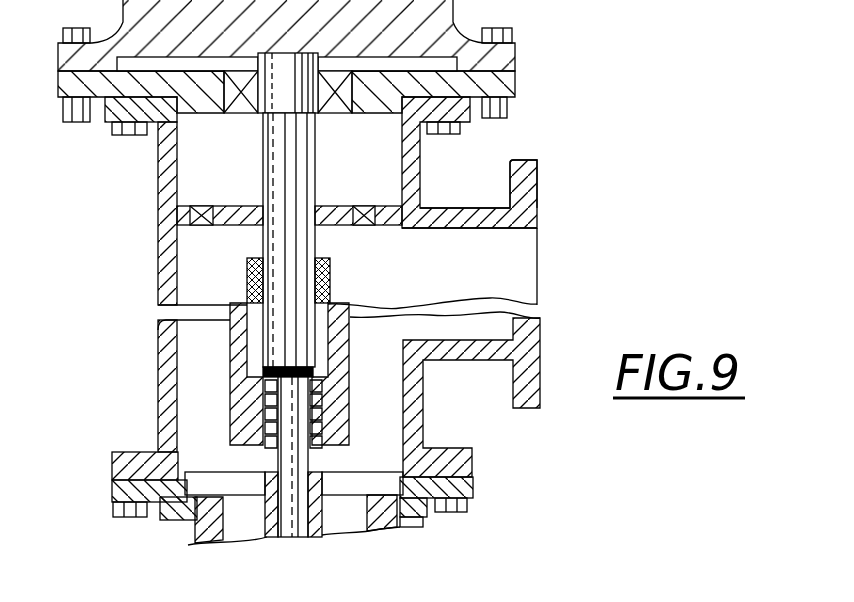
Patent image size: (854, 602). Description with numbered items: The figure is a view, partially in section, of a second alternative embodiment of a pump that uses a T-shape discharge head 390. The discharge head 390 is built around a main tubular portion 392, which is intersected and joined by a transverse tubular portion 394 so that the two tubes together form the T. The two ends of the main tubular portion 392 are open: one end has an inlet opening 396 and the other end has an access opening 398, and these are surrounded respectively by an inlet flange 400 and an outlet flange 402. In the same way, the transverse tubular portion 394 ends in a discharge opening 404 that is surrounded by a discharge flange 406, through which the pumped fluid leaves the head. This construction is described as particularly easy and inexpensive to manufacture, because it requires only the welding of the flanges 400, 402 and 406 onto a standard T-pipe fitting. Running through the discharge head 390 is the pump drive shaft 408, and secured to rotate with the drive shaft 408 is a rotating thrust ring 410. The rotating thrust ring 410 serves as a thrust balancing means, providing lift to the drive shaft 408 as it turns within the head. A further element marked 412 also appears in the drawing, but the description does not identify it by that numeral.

The T-shape discharge head 390 is at (146, 212).
The main tubular portion 392 is at (184, 177).
The transverse tubular portion 394 is at (463, 230).
The inlet opening 396 is at (405, 424).
The access opening 398 is at (425, 111).
The inlet flange 400 is at (470, 469).
The outlet flange 402 is at (505, 119).
The discharge opening 404 is at (523, 227).
The discharge flange 406 is at (522, 176).
The drive shaft 408 is at (260, 137).
The rotating thrust ring 410 is at (207, 226).
The seal ring 412 is at (237, 228).